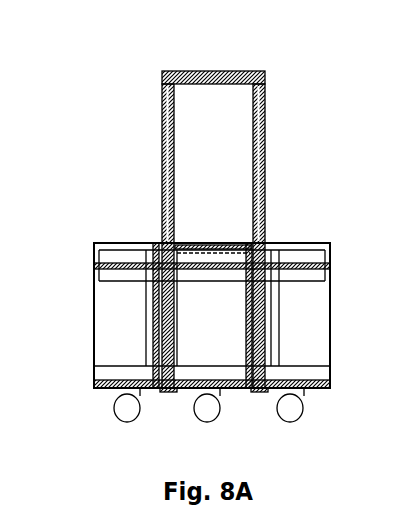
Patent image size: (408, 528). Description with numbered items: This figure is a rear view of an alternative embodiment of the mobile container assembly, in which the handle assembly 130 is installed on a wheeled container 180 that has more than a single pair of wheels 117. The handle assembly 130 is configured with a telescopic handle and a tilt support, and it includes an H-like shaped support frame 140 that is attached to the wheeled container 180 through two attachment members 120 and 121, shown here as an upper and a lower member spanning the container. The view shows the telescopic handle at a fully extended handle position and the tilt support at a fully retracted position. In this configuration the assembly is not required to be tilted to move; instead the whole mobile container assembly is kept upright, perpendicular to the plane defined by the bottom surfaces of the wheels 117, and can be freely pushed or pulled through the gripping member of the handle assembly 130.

The handle assembly 130 is at (132, 62).
The H-like shaped support frame 140 is at (153, 228).
The attachment member 120 is at (108, 275).
The wheeled container 180 is at (117, 320).
The attachment member 121 is at (107, 373).
The wheels 117 is at (296, 405).